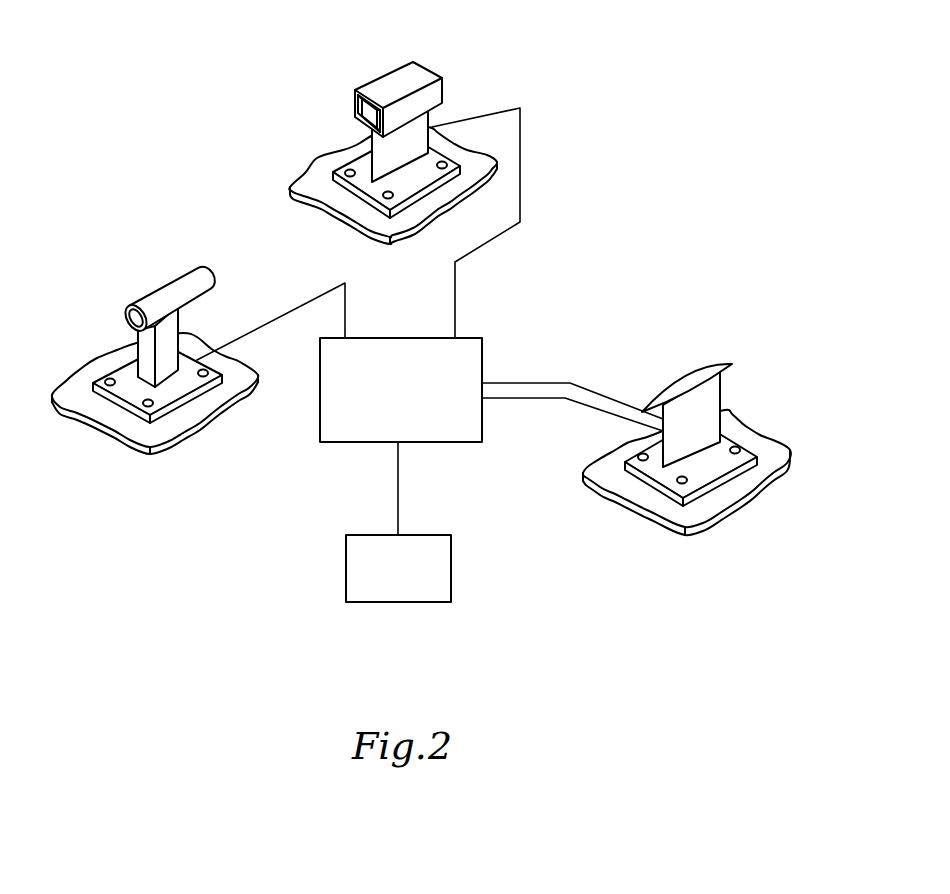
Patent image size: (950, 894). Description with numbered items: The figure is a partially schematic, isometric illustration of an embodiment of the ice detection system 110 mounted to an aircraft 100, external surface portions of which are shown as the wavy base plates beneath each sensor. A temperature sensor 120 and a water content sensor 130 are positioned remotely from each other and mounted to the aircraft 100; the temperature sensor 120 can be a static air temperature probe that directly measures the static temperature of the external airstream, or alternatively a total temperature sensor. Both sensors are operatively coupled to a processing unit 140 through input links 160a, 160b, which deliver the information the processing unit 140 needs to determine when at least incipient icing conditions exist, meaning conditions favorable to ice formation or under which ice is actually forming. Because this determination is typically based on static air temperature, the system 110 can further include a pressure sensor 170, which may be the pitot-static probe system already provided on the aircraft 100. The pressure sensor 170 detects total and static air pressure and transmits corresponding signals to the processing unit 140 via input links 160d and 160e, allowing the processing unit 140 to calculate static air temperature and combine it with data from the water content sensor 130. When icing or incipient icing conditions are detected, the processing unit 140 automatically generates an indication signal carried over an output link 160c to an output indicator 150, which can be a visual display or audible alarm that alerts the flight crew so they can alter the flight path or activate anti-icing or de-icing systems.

The aircraft 100 is at (52, 361).
The ice detection system 110 is at (619, 66).
The temperature sensor 120 is at (349, 67).
The water content sensor 130 is at (141, 261).
The processing unit 140 is at (473, 338).
The output indicator 150 is at (452, 565).
The input link 160a is at (322, 295).
The input link 160b is at (521, 200).
The output link 160c is at (398, 488).
The input link 160d is at (590, 415).
The input link 160e is at (545, 382).
The pressure sensor 170 is at (729, 347).